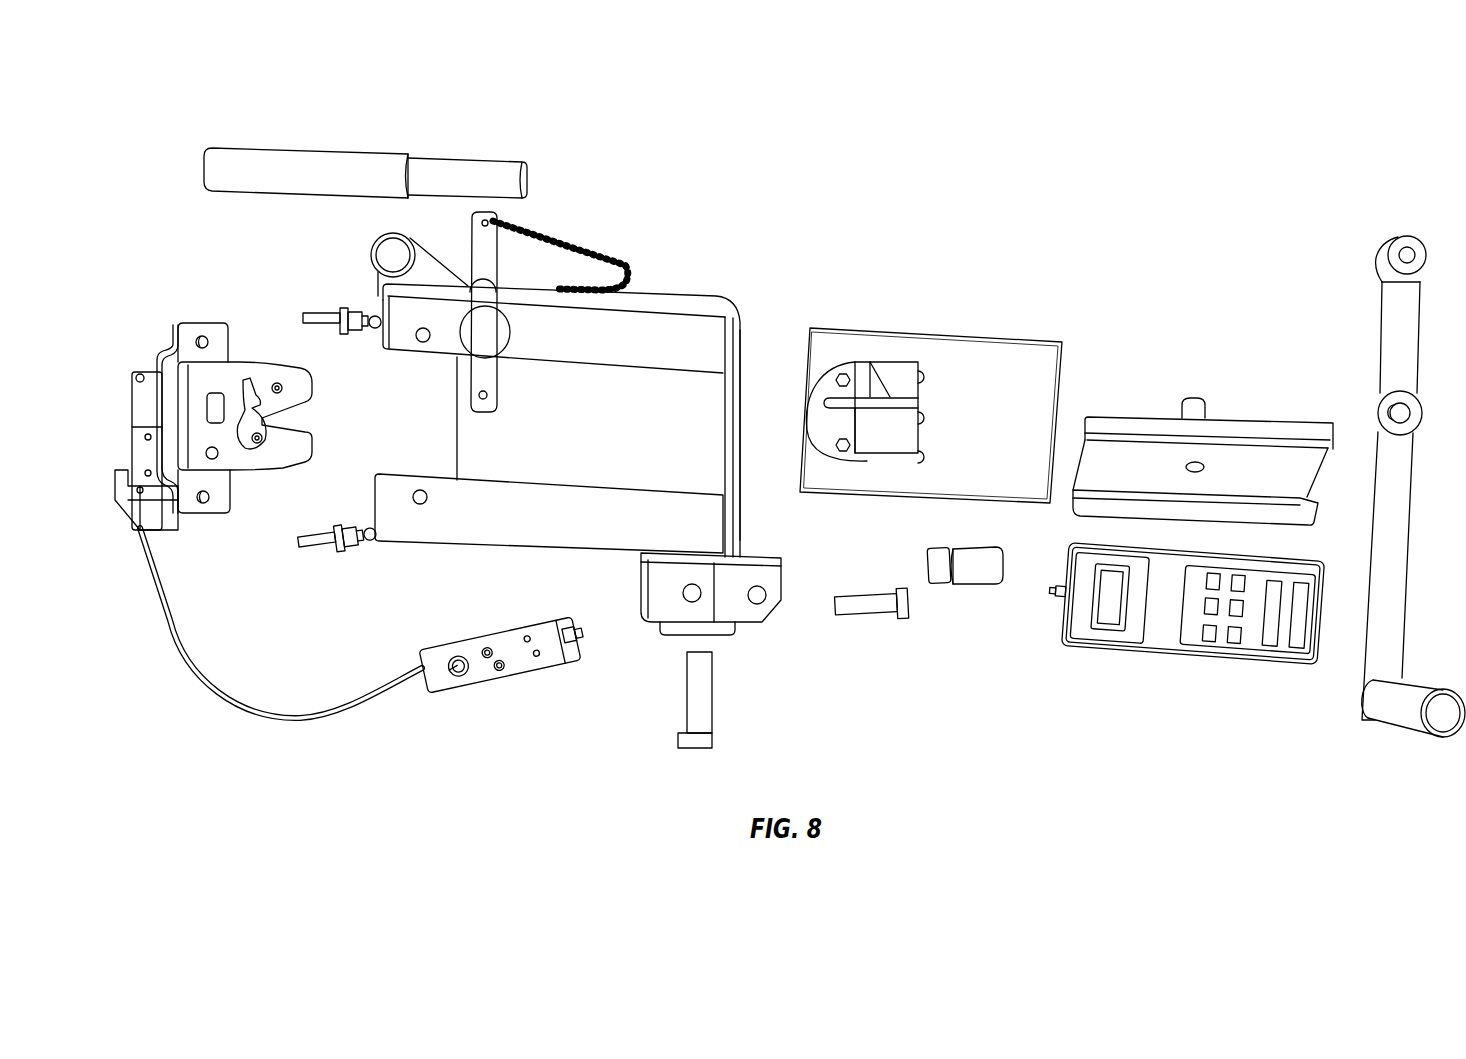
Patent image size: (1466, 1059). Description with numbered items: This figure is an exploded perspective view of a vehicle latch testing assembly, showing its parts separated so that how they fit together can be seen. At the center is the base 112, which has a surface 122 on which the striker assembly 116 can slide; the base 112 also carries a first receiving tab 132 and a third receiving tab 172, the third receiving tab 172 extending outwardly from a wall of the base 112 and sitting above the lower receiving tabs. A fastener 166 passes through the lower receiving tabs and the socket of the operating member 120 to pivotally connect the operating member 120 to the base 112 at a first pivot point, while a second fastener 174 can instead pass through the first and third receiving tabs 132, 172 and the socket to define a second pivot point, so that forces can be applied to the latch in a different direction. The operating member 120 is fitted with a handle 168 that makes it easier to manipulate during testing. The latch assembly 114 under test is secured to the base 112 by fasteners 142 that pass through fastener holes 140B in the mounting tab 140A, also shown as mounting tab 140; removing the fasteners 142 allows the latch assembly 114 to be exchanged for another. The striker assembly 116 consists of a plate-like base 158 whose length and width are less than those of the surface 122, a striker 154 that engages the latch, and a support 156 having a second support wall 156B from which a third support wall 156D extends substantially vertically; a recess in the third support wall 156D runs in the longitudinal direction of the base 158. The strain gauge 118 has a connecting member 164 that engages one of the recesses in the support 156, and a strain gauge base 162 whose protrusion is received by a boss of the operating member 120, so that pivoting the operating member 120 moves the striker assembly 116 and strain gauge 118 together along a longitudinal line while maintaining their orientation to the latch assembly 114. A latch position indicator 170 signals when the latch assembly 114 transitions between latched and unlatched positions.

The base 112 is at (680, 298).
The latch assembly 114 is at (256, 359).
The striker assembly 116 is at (1007, 331).
The strain gauge 118 is at (1160, 655).
The operating member 120 is at (1378, 342).
The surface 122 is at (675, 418).
The first receiving tab 132 is at (740, 613).
The mounting tab 140 is at (172, 340).
The mounting tab 140A is at (218, 497).
The fastener hole 140B is at (202, 338).
The fastener 142 is at (312, 541).
The striker 154 is at (835, 398).
The support 156 is at (907, 362).
The second support wall 156B is at (907, 434).
The third support wall 156D is at (908, 405).
The base of the striker assembly 158 is at (1050, 340).
The strain gauge base 162 is at (1242, 420).
The connecting member 164 is at (975, 585).
The fastener 166 is at (865, 615).
The handle 168 is at (378, 148).
The latch position indicator 170 is at (517, 678).
The third receiving tab 172 is at (658, 612).
The fastener 174 is at (712, 710).